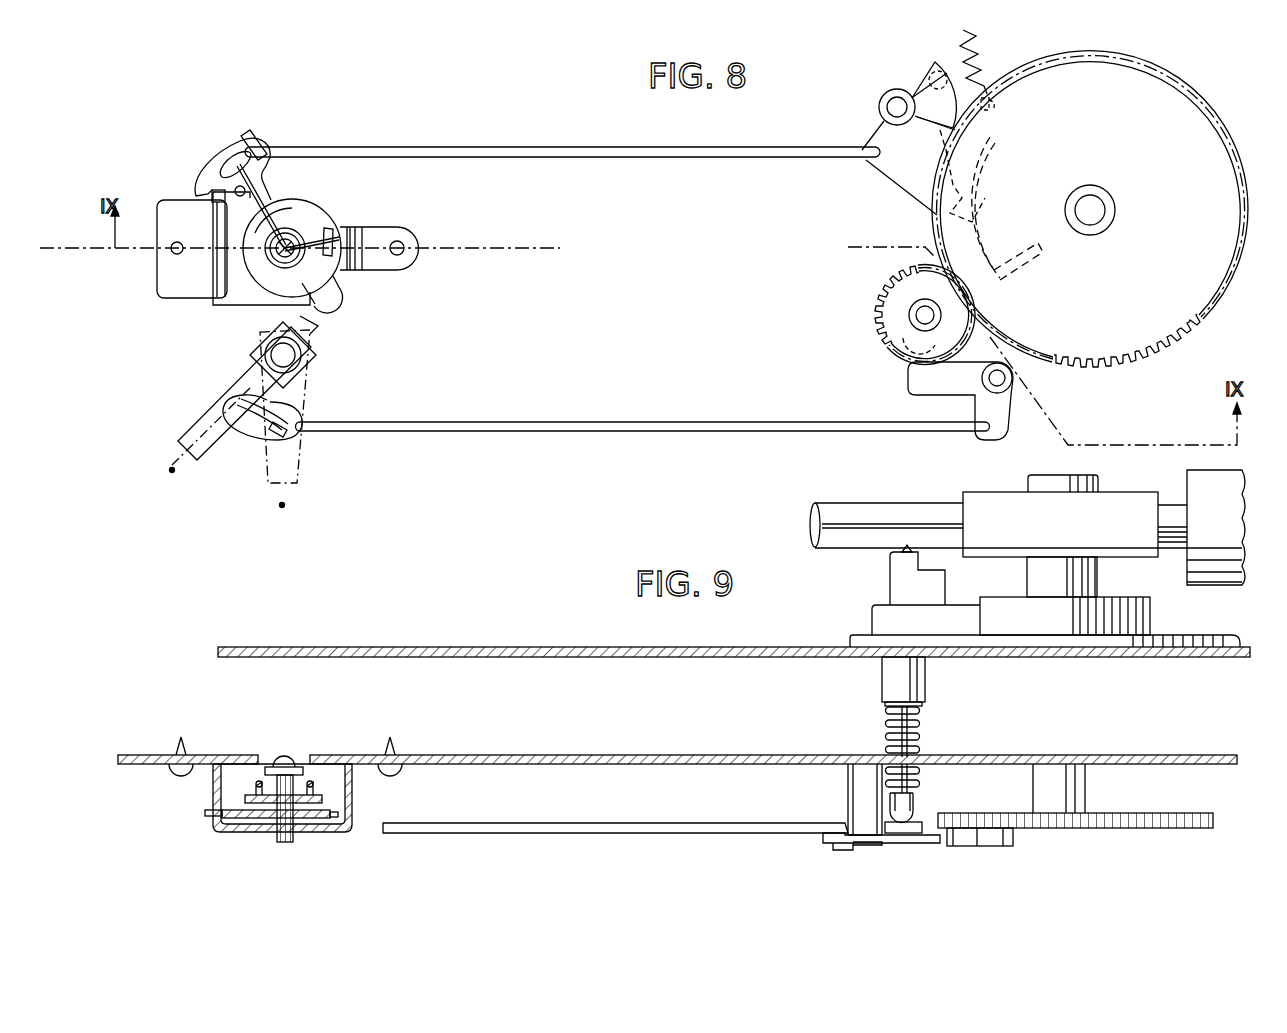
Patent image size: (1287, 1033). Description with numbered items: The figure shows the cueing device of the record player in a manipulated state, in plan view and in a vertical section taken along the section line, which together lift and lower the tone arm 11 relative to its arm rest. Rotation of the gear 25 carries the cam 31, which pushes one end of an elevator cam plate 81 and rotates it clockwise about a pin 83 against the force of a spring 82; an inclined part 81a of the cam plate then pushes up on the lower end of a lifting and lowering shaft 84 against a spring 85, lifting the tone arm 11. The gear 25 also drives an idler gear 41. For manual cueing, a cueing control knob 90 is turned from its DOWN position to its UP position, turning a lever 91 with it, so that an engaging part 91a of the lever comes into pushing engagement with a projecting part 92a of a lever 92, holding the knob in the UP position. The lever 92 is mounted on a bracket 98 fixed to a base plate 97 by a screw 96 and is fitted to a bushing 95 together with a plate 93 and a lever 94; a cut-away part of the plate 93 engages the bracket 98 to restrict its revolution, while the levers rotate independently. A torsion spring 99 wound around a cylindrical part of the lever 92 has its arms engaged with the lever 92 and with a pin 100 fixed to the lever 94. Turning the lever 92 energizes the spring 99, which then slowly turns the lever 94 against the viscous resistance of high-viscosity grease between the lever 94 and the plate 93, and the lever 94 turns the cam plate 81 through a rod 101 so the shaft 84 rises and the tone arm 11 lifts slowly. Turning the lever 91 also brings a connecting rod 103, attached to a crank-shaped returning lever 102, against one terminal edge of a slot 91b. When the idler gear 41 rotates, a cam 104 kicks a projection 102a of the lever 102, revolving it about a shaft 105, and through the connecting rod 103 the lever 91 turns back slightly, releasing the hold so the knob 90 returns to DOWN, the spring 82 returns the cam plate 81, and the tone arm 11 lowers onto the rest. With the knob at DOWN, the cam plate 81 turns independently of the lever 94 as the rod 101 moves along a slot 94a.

In FIG. 9, the tone arm 11 is at (868, 503).
In FIG. 8, the gear 25 is at (1178, 96).
In FIG. 9, the gear 25 is at (1152, 813).
In FIG. 8, the cam 31 is at (992, 190).
In FIG. 9, the cam 31 is at (1014, 840).
In FIG. 8, the idler gear 41 is at (890, 284).
In FIG. 8, the elevator cam plate 81 is at (906, 192).
In FIG. 9, the elevator cam plate 81 is at (892, 845).
In FIG. 9, the inclined part 81a is at (907, 836).
In FIG. 8, the spring 82 is at (985, 72).
In FIG. 8, the pin 83 is at (890, 92).
In FIG. 9, the pin 83 is at (848, 795).
In FIG. 8, the lifting and lowering shaft 84 is at (932, 75).
In FIG. 9, the lifting and lowering shaft 84 is at (925, 742).
In FIG. 9, the spring 85 is at (885, 716).
In FIG. 8, the cueing control knob 90 is at (206, 428).
In FIG. 8, the lever 91 is at (224, 380).
In FIG. 8, the engaging part 91a is at (314, 343).
In FIG. 8, the slot 91b is at (256, 434).
In FIG. 8, the lever 92 is at (315, 224).
In FIG. 9, the lever 92 is at (245, 799).
In FIG. 8, the projecting part 92a is at (342, 300).
In FIG. 8, the plate 93 is at (232, 303).
In FIG. 9, the plate 93 is at (226, 824).
In FIG. 8, the lever 94 is at (216, 162).
In FIG. 9, the lever 94 is at (264, 826).
In FIG. 8, the slot 94a is at (247, 138).
In FIG. 8, the bushing 95 is at (271, 252).
In FIG. 9, the bushing 95 is at (313, 783).
In FIG. 8, the screw 96 is at (270, 264).
In FIG. 9, the screw 96 is at (284, 753).
In FIG. 9, the base plate 97 is at (208, 755).
In FIG. 8, the bracket 98 is at (400, 230).
In FIG. 9, the bracket 98 is at (354, 800).
In FIG. 8, the torsion spring 99 is at (291, 226).
In FIG. 9, the torsion spring 99 is at (257, 783).
In FIG. 8, the pin 100 is at (208, 192).
In FIG. 8, the rod 101 is at (677, 145).
In FIG. 9, the rod 101 is at (668, 821).
In FIG. 8, the returning lever 102 is at (943, 402).
In FIG. 8, the projection 102a is at (905, 367).
In FIG. 8, the connecting rod 103 is at (661, 420).
In FIG. 8, the cam 104 is at (890, 320).
In FIG. 8, the shaft 105 is at (1012, 380).